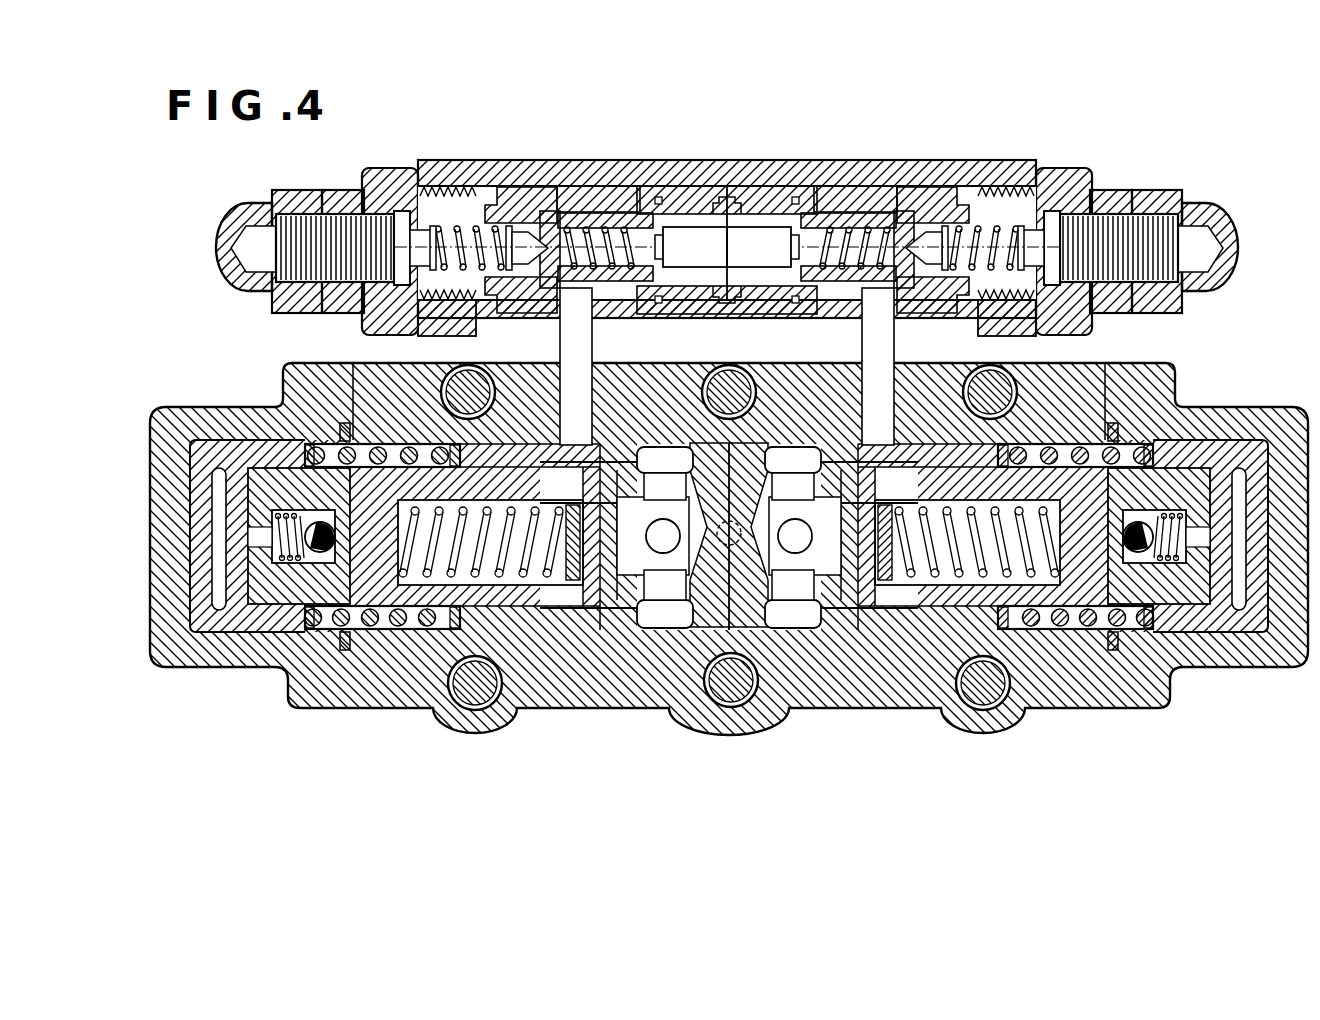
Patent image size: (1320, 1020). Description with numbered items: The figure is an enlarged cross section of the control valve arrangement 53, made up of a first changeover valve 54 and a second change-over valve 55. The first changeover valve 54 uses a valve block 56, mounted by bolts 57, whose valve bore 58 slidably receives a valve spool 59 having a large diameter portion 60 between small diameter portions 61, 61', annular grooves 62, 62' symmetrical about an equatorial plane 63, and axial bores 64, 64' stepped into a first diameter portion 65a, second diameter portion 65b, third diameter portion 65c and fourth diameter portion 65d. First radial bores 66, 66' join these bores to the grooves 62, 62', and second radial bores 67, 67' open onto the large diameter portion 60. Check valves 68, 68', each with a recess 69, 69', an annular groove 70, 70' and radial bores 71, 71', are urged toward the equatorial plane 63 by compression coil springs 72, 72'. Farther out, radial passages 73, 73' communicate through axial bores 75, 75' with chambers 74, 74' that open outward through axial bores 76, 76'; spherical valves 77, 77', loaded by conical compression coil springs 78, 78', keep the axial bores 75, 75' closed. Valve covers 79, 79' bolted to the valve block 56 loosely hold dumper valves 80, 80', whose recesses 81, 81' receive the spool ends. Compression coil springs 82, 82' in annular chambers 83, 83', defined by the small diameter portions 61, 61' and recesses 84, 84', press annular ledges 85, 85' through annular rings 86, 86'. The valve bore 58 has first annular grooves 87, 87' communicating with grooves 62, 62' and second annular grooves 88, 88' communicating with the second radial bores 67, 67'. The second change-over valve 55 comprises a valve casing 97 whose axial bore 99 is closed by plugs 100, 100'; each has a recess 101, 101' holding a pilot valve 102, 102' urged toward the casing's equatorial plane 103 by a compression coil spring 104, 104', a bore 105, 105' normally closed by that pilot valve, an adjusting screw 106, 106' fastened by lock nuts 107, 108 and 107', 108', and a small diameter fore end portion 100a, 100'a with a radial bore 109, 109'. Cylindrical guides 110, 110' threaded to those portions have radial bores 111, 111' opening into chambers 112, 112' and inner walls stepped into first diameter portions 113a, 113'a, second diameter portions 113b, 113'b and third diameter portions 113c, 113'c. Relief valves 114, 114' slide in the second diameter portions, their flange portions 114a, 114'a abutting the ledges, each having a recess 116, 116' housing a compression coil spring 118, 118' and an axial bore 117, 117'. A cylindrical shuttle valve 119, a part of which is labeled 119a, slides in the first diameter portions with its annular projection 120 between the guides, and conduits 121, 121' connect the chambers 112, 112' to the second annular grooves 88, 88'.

The control valve arrangement 53 is at (1218, 168).
The first changeover valve 54 is at (1103, 365).
The second change-over valve 55 is at (883, 120).
The valve block 56 is at (840, 705).
The bolts 57 is at (514, 712).
The valve bore 58 is at (736, 655).
The valve spool 59 is at (721, 620).
The large diameter portion 60 is at (480, 440).
The small diameter portion 61 is at (1093, 648).
The small diameter portion 61' is at (370, 649).
The annular groove 62 is at (807, 614).
The annular groove 62' is at (651, 614).
The equatorial plane 63 is at (740, 508).
The axial bore 64 is at (1041, 637).
The axial bore 64' is at (431, 638).
The first diameter portion 65a is at (645, 456).
The second diameter portion 65b is at (729, 425).
The third diameter portion 65c is at (462, 622).
The fourth diameter portion 65d is at (729, 492).
The first radial bores 66 is at (778, 460).
The first radial bores 66' is at (675, 460).
The second radial bores 67 is at (928, 444).
The second radial bores 67' is at (530, 444).
The check valve 68 is at (865, 680).
The check valve 68' is at (593, 680).
The recess 69 is at (969, 552).
The recess 69' is at (489, 552).
The annular groove 70 is at (913, 578).
The annular groove 70' is at (549, 578).
The radial bores 71 is at (888, 559).
The radial bores 71' is at (576, 559).
The compression coil spring 72 is at (966, 516).
The compression coil spring 72' is at (481, 516).
The radial passage 73 is at (1129, 536).
The radial passage 73' is at (333, 536).
The chamber 74 is at (1153, 552).
The chamber 74' is at (308, 552).
The axial bore 75 is at (1133, 513).
The axial bore 75' is at (323, 513).
The axial bore 76 is at (1210, 516).
The axial bore 76' is at (247, 516).
The spherical valve 77 is at (1184, 516).
The spherical valve 77' is at (273, 516).
The conical compression coil spring 78 is at (1166, 571).
The conical compression coil spring 78' is at (292, 571).
The valve cover 79 is at (1197, 384).
The valve cover 79' is at (253, 385).
The dumper valve 80 is at (1246, 685).
The dumper valve 80' is at (220, 685).
The recess 81 is at (1268, 539).
The cap slot 81' is at (190, 539).
The compression coil spring 82 is at (1136, 421).
The compression coil spring 82' is at (317, 421).
The annular chamber 83 is at (1078, 420).
The annular chamber 83' is at (377, 420).
The recess 84 is at (1075, 643).
The recess 84' is at (382, 649).
The annular ledge 85 is at (1024, 432).
The annular ledge 85' is at (426, 419).
The annular ring 86 is at (1070, 432).
The annular ring 86' is at (389, 432).
The first annular groove 87 is at (796, 460).
The first annular groove 87' is at (657, 460).
The second annular groove 88 is at (883, 451).
The second annular groove 88' is at (571, 451).
The valve casing 97 is at (768, 120).
The axial bore 99 is at (556, 125).
The plug 100 is at (1063, 226).
The plug 100' is at (395, 210).
The small diameter fore end portion 100a is at (1004, 318).
The small diameter fore end portion 100'a is at (482, 159).
The recess 101 is at (984, 229).
The recess 101' is at (458, 229).
The pilot valve 102 is at (995, 210).
The pilot valve 102' is at (444, 303).
The equatorial plane 103 is at (720, 180).
The compression coil spring 104 is at (1032, 185).
The compression coil spring 104' is at (414, 185).
The bore 105 is at (937, 313).
The bore 105' is at (520, 313).
The adjusting screw 106 is at (1163, 227).
The adjusting screw 106' is at (287, 227).
The lock nut 107 is at (1106, 227).
The lock nut 107' is at (343, 217).
The lock nut 108 is at (1223, 233).
The lock nut 108' is at (223, 234).
The radial bore 109 is at (953, 172).
The radial bore 109' is at (483, 172).
The cylindrical guide 110 is at (916, 192).
The cylindrical guide 110' is at (569, 159).
The radial bore 111 is at (835, 156).
The radial bore 111' is at (611, 156).
The chamber 112 is at (876, 183).
The chamber 112' is at (563, 183).
The first diameter portion 113a is at (760, 186).
The first diameter portion 113'a is at (676, 167).
The second diameter portion 113b is at (760, 314).
The second diameter portion 113'b is at (679, 318).
The third diameter portion 113c is at (822, 314).
The third diameter portion 113'c is at (603, 308).
The relief valve 114 is at (856, 174).
The relief valve 114' is at (597, 192).
The flange portion 114a is at (845, 186).
The flange portion 114'a is at (596, 183).
The recess 116 is at (835, 366).
The recess 116' is at (619, 366).
The axial bore 117 is at (759, 247).
The axial bore 117' is at (695, 247).
The compression coil spring 118 is at (893, 319).
The compression coil spring 118' is at (558, 319).
The cylindrical shuttle valve 119 is at (736, 186).
The pilot notch lower 119a is at (683, 343).
The annular projection 120 is at (756, 392).
The conduit 121 is at (890, 366).
The conduit 121' is at (563, 366).